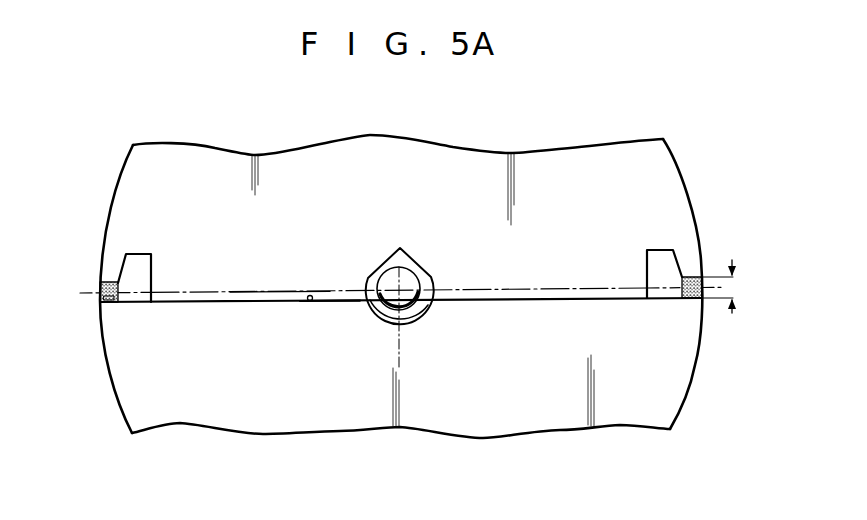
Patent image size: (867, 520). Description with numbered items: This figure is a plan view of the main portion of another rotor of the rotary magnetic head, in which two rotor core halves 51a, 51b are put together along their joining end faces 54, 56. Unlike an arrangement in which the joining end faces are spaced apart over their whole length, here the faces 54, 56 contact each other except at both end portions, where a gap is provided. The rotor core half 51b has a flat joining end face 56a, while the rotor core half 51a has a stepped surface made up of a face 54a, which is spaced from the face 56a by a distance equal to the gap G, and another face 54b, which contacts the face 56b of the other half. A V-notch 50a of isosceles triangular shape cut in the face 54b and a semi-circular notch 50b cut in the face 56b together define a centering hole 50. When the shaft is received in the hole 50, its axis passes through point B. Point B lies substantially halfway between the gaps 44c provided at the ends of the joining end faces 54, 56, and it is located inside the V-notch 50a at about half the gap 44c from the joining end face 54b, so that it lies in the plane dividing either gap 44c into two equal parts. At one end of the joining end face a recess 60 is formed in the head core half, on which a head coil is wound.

The centering hole 50 is at (388, 245).
The V-notch 50a is at (405, 262).
The semi-circular notch 50b is at (412, 322).
The point B is at (390, 300).
The rotor core half 51a is at (577, 168).
The rotor core half 51b is at (520, 418).
The joining end face 54 is at (238, 305).
The face 54a is at (100, 291).
The face 54b is at (337, 302).
The joining end face 56 is at (278, 292).
The flat joining end face 56a is at (105, 304).
The face 56b is at (310, 300).
The recess 60 is at (658, 262).
The gap 44c is at (707, 299).
The gap G is at (725, 286).